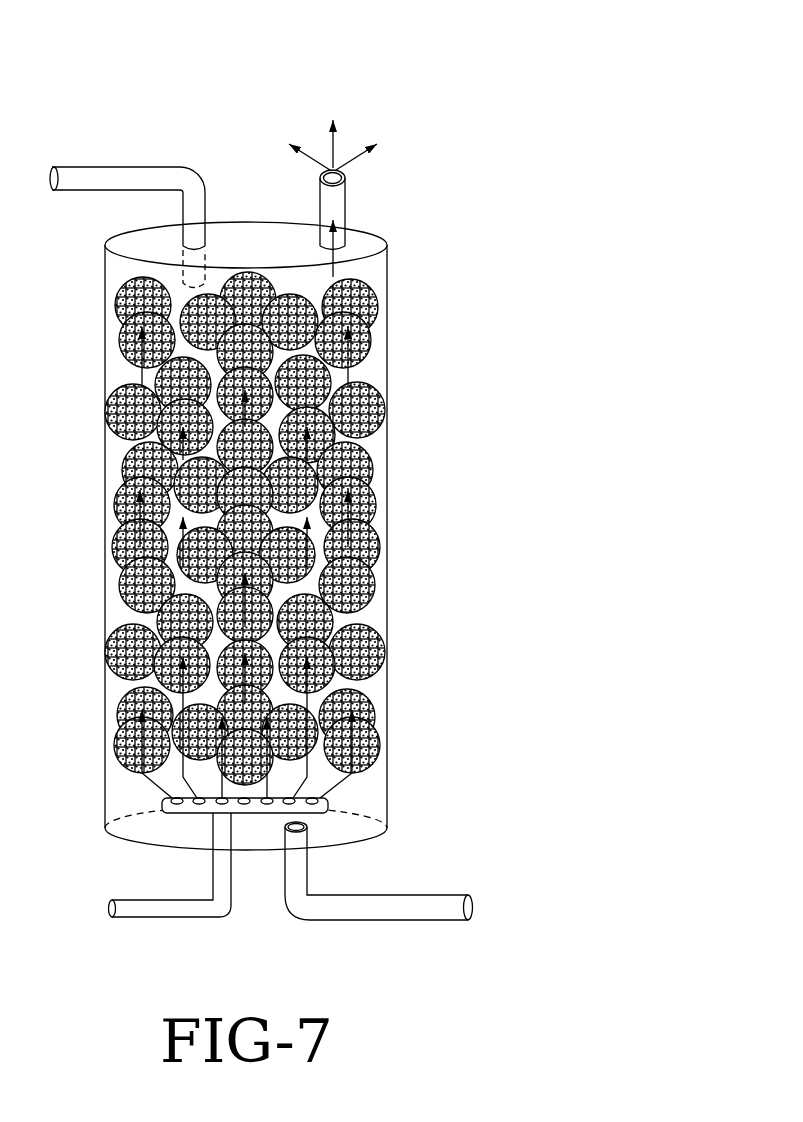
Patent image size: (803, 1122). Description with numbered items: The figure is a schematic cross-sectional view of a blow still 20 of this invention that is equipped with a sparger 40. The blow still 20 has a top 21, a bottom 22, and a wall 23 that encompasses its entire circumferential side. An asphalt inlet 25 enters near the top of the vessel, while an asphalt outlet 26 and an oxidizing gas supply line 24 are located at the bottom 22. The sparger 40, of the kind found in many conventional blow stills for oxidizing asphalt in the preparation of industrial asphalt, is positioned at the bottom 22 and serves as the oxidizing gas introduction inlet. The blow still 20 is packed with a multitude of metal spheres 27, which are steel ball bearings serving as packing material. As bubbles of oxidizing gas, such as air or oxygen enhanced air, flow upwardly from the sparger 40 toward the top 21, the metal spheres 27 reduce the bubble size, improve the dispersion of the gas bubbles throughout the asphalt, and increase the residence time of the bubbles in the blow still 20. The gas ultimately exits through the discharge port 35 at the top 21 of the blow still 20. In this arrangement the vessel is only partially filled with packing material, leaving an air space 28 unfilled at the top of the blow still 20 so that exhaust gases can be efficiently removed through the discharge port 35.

The blow still 20 is at (154, 120).
The top 21 is at (273, 242).
The bottom 22 is at (350, 843).
The wall 23 is at (387, 543).
The oxidizing gas supply line 24 is at (172, 910).
The asphalt inlet 25 is at (118, 190).
The asphalt outlet 26 is at (340, 910).
The metal spheres 27 is at (128, 418).
The air space 28 is at (367, 375).
The discharge port 35 is at (348, 214).
The sparger 40 is at (235, 808).